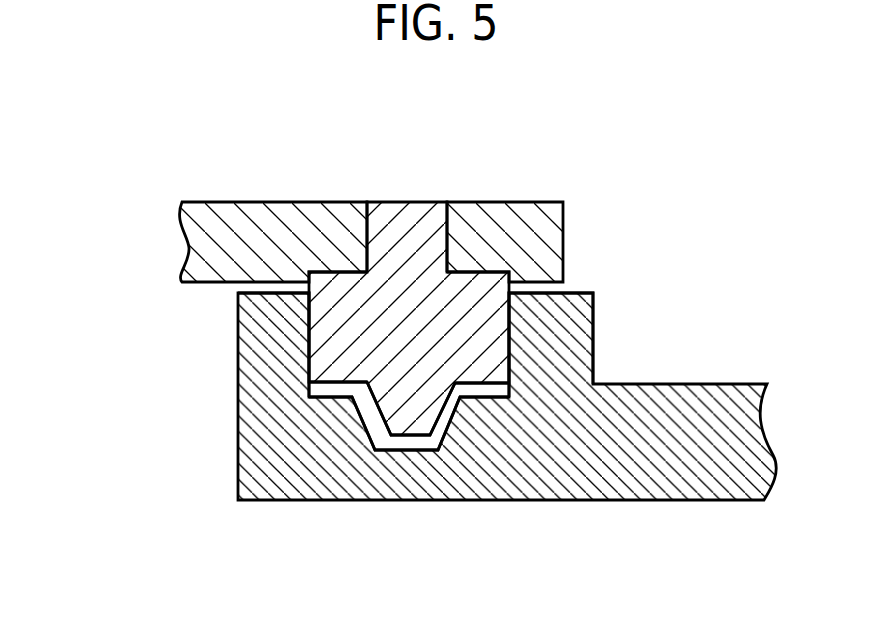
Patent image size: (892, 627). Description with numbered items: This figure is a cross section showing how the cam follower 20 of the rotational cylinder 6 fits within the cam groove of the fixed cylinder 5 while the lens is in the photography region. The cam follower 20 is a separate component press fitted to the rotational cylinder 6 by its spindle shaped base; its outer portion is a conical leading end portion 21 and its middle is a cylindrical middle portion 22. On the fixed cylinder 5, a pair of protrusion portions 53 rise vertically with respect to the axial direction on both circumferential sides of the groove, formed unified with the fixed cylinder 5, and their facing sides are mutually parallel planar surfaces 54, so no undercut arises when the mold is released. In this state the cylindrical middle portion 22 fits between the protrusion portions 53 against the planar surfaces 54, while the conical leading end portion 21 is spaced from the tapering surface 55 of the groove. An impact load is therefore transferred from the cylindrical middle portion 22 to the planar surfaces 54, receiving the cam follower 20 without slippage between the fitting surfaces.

The fixed cylinder 5 is at (697, 453).
The rotational cylinder 6 is at (196, 240).
The cam follower 20 is at (408, 202).
The conical leading end portion 21 is at (390, 412).
The cylindrical middle portion 22 is at (510, 313).
The protrusion portions 53 is at (255, 352).
The planar surfaces 54 is at (308, 372).
The tapering surface 55 is at (456, 425).